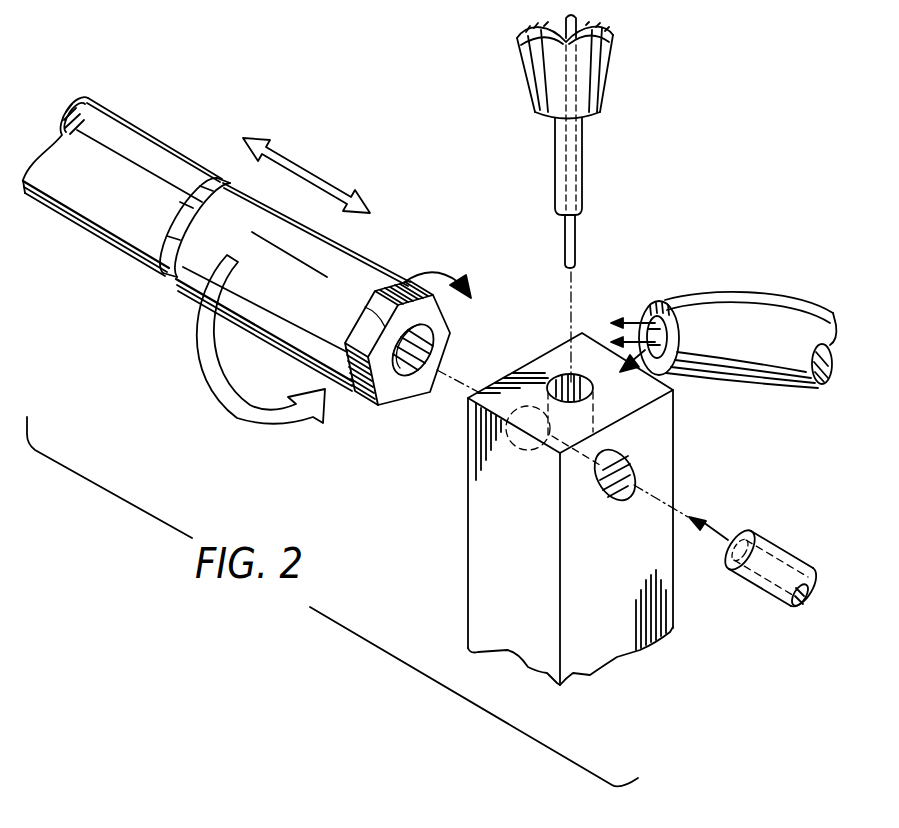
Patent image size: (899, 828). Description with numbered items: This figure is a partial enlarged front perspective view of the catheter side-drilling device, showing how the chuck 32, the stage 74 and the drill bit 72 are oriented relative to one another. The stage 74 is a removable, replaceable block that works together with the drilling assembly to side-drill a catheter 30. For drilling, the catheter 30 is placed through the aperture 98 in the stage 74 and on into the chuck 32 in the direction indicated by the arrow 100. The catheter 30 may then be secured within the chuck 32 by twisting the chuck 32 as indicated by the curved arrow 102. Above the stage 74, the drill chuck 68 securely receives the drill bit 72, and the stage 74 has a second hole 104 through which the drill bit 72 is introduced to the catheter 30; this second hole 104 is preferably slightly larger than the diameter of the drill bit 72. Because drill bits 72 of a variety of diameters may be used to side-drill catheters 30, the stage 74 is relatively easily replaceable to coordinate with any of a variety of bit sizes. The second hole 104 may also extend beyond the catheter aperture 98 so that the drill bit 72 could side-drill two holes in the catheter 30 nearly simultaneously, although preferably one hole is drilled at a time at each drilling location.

The catheter 30 is at (772, 597).
The chuck 32 is at (343, 265).
The drill chuck 68 is at (600, 70).
The drill bit 72 is at (580, 190).
The stage 74 is at (491, 522).
The aperture 98 is at (618, 487).
The arrow 100 is at (706, 514).
The arrow 102 is at (436, 272).
The second hole 104 is at (560, 377).